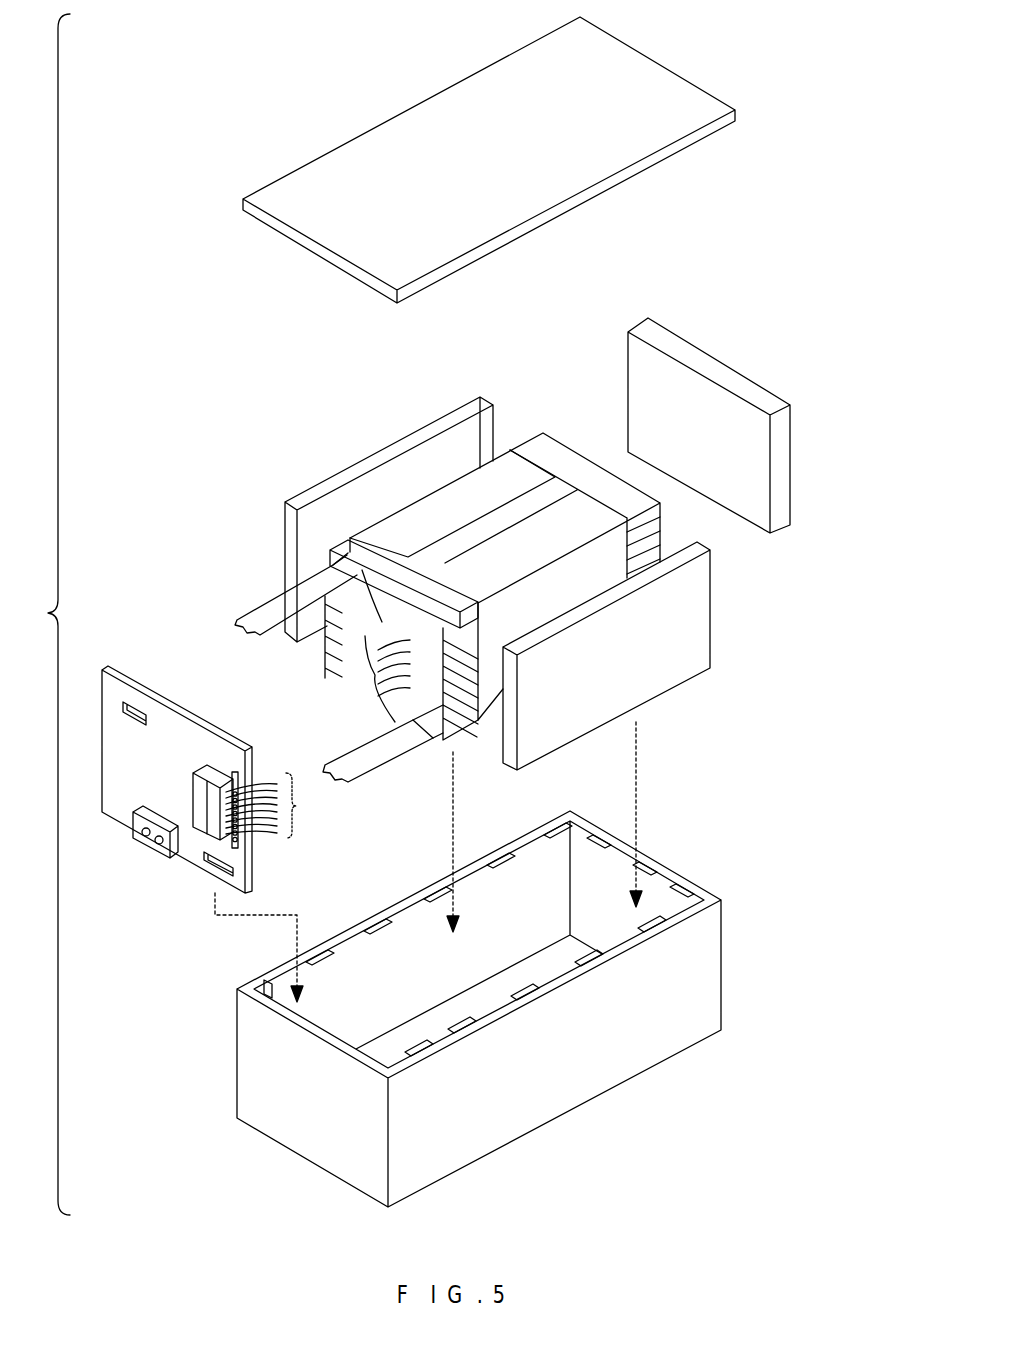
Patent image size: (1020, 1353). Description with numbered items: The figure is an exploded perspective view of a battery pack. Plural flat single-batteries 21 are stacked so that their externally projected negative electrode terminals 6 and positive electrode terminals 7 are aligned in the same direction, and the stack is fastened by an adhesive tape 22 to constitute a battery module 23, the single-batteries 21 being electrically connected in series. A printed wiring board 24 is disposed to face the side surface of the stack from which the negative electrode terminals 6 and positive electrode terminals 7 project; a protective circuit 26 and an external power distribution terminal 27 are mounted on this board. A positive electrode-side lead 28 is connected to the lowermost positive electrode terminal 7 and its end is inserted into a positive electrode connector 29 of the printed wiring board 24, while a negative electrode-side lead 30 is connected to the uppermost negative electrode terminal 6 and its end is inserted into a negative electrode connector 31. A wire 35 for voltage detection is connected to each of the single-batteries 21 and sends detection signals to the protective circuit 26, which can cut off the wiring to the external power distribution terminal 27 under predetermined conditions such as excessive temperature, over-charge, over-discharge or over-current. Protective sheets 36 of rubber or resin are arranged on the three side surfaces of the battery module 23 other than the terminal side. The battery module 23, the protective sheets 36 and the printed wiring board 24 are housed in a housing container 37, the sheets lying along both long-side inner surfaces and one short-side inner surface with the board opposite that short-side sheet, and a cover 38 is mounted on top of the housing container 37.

The cover 38 is at (675, 95).
The protective sheet 36 is at (352, 477).
The housing container 37 is at (706, 968).
The adhesive tape 22 is at (570, 520).
The battery module 23 is at (437, 495).
The single-battery 21 is at (662, 552).
The positive electrode terminal 7 is at (435, 575).
The negative electrode-side lead 30 is at (243, 610).
The positive electrode-side lead 28 is at (372, 766).
The negative electrode terminal 6 is at (337, 565).
The wire for voltage detection 35 is at (360, 667).
The printed wiring board 24 is at (134, 670).
The negative electrode connector 31 is at (143, 706).
The protective circuit 26 is at (211, 768).
The external power distribution terminal 27 is at (158, 856).
The positive electrode connector 29 is at (250, 870).